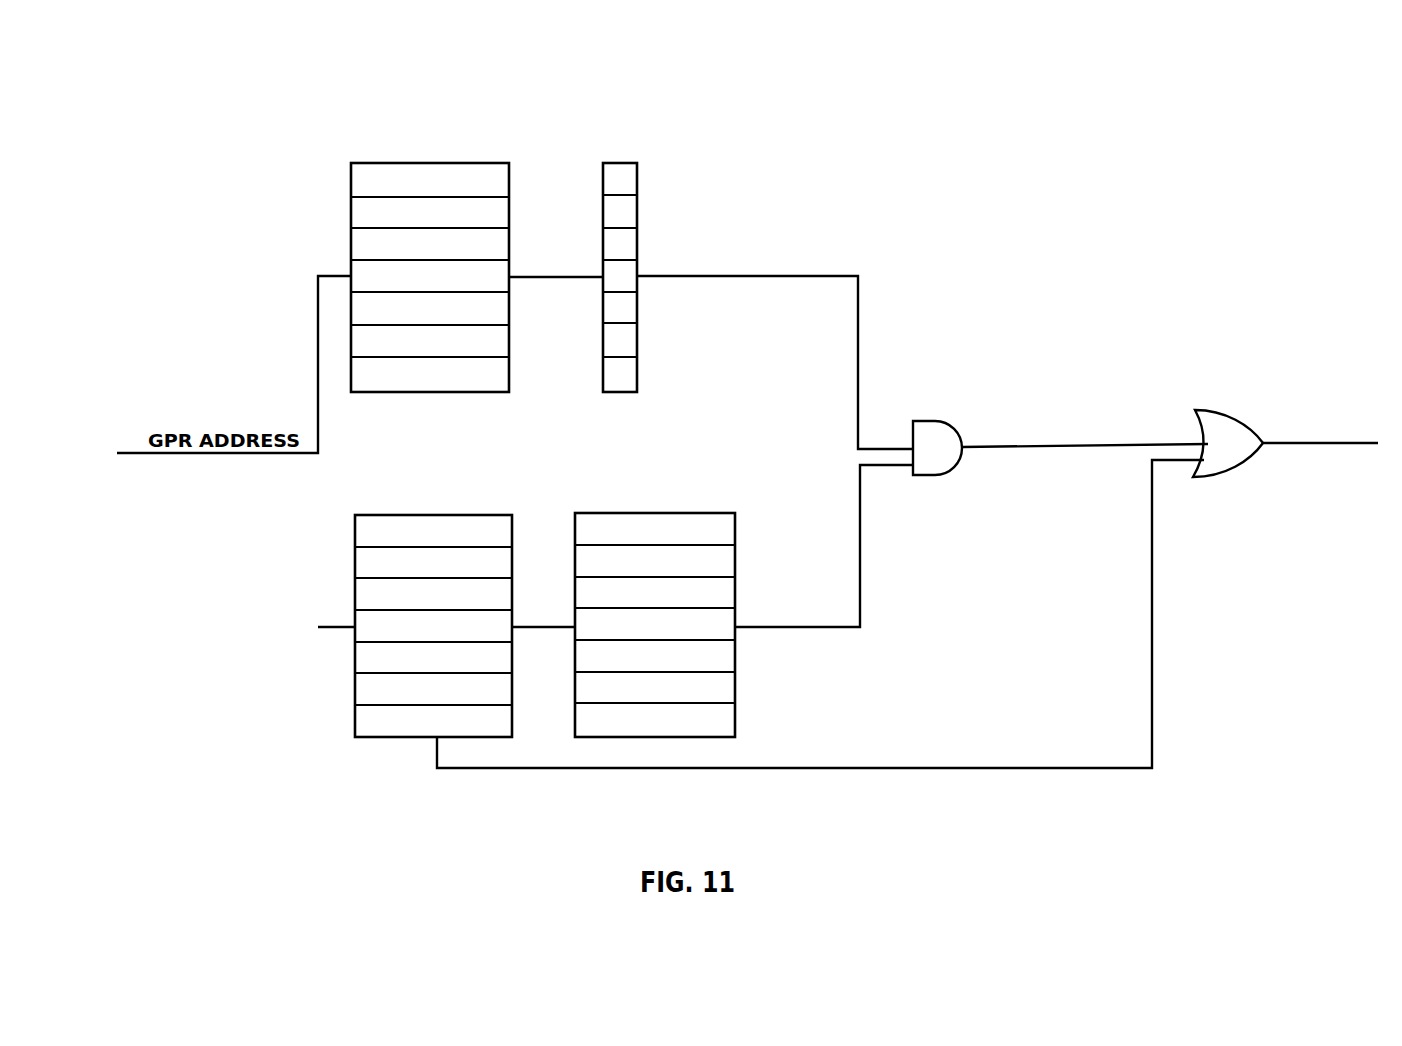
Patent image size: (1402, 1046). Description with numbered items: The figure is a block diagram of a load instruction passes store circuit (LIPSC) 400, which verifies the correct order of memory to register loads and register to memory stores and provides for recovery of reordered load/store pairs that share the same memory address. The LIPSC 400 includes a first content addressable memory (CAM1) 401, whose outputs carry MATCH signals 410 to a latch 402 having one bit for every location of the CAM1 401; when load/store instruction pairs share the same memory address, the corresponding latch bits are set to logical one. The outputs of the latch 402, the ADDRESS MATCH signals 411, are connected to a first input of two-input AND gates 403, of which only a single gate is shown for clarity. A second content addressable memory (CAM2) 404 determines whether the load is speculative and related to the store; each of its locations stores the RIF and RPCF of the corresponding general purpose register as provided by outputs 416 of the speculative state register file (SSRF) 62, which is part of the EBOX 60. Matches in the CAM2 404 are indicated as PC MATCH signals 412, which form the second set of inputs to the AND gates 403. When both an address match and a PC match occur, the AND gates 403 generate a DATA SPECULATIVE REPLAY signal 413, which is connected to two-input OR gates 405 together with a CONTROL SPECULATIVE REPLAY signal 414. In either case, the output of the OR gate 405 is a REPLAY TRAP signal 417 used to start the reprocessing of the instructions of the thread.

The EBOX 60 is at (554, 130).
The speculative state register file 62 is at (415, 515).
The load instruction passes store circuit 400 is at (913, 217).
The first content addressable memory 401 is at (403, 163).
The latch 402 is at (612, 163).
The AND gate 403 is at (945, 421).
The second content addressable memory 404 is at (645, 513).
The OR gate 405 is at (1238, 411).
The MATCH signal 410 is at (530, 278).
The ADDRESS MATCH signal 411 is at (697, 277).
The PC MATCH signal 412 is at (797, 628).
The DATA SPECULATIVE REPLAY signal 413 is at (988, 448).
The CONTROL SPECULATIVE REPLAY signal 414 is at (793, 769).
The outputs of the SSRF 416 is at (560, 633).
The REPLAY TRAP signal 417 is at (1271, 445).